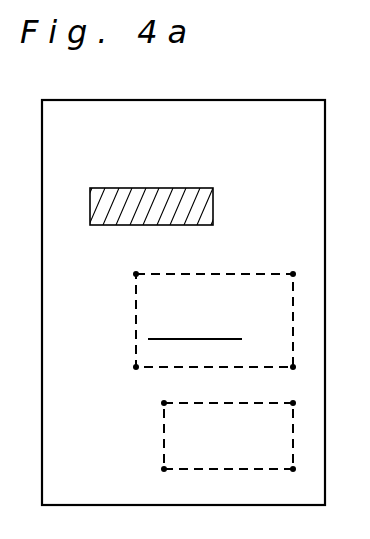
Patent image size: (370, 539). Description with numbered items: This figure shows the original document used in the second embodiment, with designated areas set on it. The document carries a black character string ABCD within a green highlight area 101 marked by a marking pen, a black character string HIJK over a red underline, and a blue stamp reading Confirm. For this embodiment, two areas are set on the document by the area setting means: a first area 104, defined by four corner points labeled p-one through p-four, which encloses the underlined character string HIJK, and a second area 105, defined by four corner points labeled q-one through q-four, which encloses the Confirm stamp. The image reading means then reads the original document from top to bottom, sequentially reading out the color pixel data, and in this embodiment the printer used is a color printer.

The green highlight area 101 is at (187, 188).
The area 104 is at (225, 273).
The area 105 is at (164, 434).